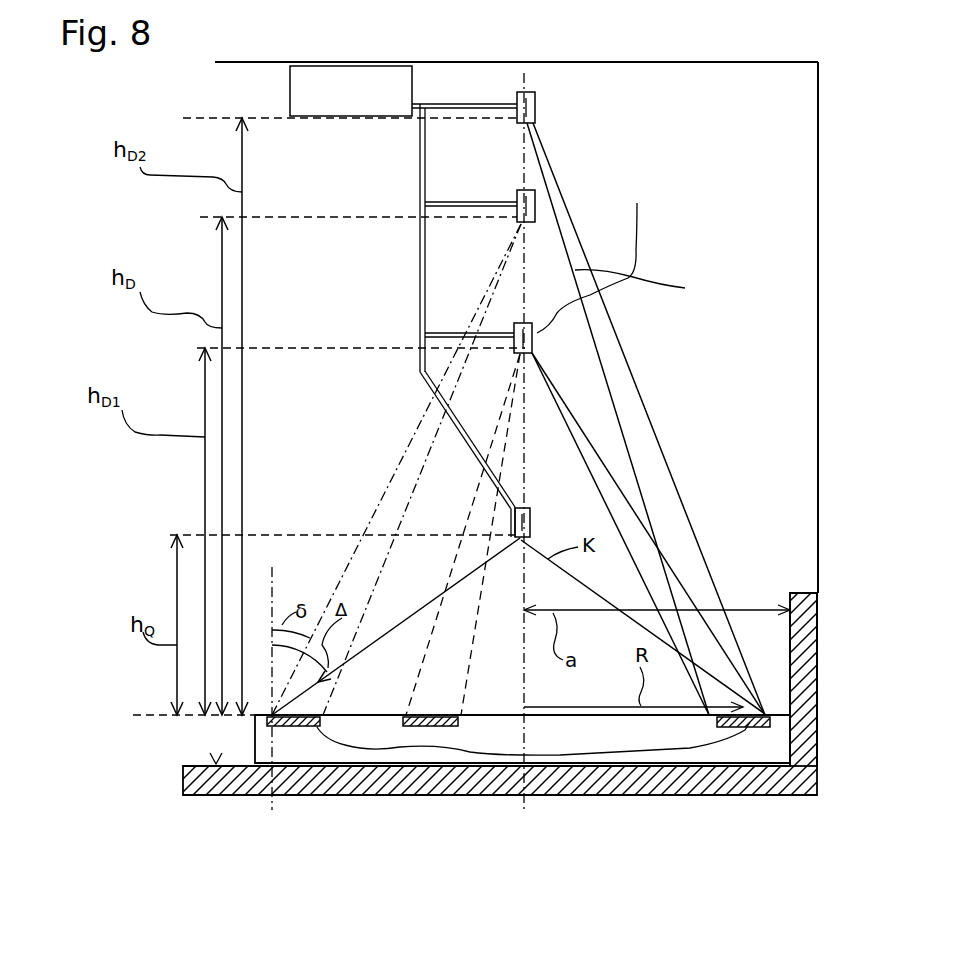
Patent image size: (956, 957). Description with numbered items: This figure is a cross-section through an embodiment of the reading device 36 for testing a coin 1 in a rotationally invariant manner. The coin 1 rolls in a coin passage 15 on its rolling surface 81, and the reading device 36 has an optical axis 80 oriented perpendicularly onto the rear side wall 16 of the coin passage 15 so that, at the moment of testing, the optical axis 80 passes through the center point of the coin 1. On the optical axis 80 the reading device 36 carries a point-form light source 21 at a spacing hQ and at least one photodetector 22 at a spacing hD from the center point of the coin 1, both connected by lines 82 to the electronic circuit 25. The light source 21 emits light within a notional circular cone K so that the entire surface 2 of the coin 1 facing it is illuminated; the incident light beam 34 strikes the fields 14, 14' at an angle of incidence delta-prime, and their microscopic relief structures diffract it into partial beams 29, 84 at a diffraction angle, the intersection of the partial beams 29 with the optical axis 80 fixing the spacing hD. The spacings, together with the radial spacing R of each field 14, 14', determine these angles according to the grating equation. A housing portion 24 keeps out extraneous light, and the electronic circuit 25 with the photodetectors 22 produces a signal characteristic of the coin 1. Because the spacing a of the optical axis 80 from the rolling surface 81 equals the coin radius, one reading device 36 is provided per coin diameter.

The coin 1 is at (253, 732).
The surface 2 is at (577, 714).
The field 14 is at (456, 691).
The field 14' is at (334, 706).
The coin passage 15 is at (183, 782).
The rear side wall 16 is at (215, 762).
The light source 21 is at (532, 517).
The photodetector 22 is at (537, 212).
The housing portion 24 is at (818, 535).
The electronic circuit 25 is at (359, 104).
The partial beam 29 is at (620, 538).
The incident light beam 34 is at (347, 661).
The reading device 36 is at (692, 151).
The optical axis 80 is at (527, 75).
The rolling surface 81 is at (788, 637).
The lines 82 is at (490, 103).
The partial beam 84 is at (627, 382).